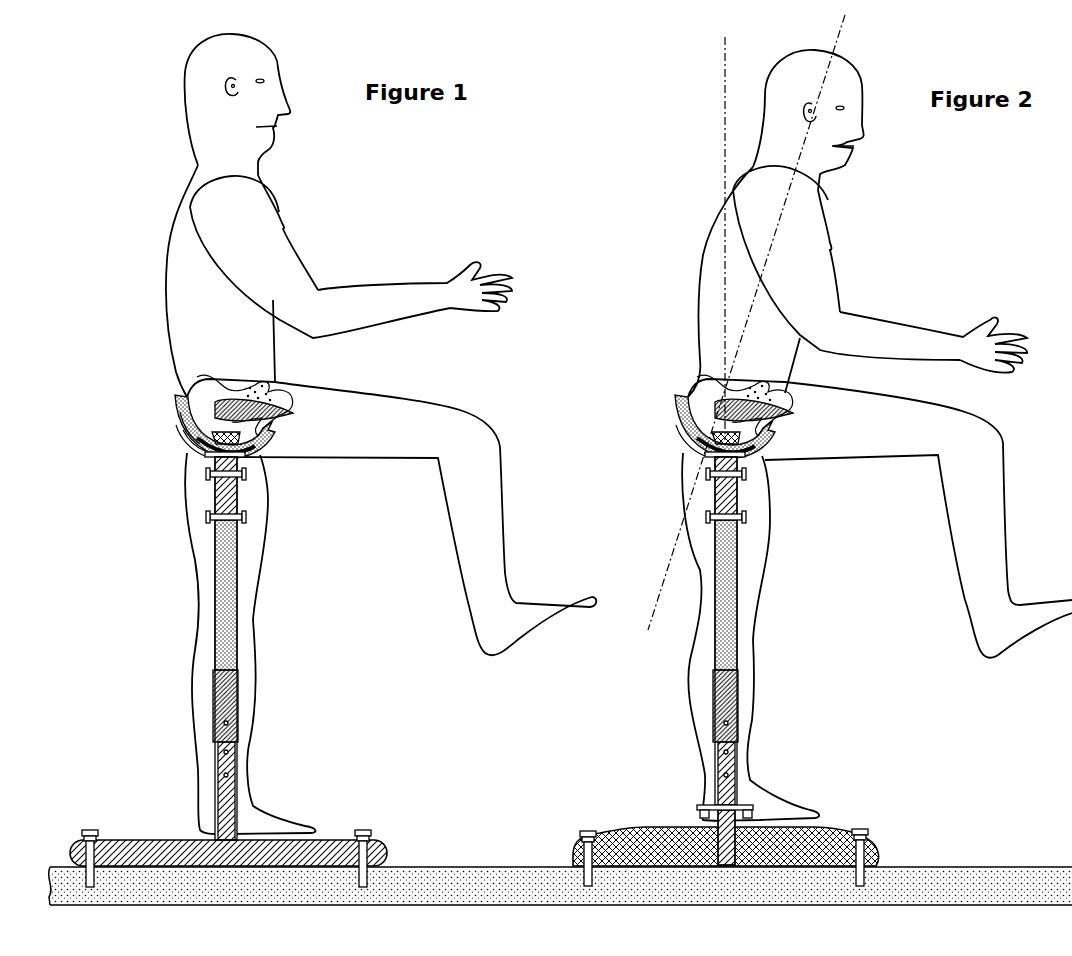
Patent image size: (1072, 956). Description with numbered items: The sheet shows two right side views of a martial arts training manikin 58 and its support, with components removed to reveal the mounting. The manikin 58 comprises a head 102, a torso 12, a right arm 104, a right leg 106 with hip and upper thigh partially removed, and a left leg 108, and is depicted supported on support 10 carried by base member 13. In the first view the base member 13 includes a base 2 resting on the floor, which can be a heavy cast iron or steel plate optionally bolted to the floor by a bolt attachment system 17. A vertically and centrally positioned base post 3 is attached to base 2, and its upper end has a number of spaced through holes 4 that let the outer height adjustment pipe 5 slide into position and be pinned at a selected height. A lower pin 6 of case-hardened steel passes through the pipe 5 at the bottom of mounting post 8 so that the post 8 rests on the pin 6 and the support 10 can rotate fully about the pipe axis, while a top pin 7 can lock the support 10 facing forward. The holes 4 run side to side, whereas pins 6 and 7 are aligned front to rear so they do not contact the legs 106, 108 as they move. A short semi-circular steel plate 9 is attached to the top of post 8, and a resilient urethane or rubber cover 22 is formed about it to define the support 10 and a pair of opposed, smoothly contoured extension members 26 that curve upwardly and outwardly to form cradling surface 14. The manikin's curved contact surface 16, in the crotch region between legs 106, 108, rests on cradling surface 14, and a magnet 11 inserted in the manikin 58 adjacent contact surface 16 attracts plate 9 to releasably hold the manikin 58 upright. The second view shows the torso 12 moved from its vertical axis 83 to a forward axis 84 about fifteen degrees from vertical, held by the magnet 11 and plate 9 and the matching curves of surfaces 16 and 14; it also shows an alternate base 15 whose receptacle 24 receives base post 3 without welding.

In FIG. 1, the base 2 is at (163, 843).
In FIG. 1, the base post 3 is at (217, 790).
In FIG. 2, the base post 3 is at (733, 783).
In FIG. 1, the spaced through holes 4 is at (217, 720).
In FIG. 1, the outer height adjustment pipe 5 is at (213, 567).
In FIG. 1, the lower pin 6 is at (210, 517).
In FIG. 1, the top pin 7 is at (210, 473).
In FIG. 1, the mounting post 8 is at (210, 458).
In FIG. 1, the semi-circular-shaped steel plate 9 is at (182, 443).
In FIG. 2, the semi-circular-shaped steel plate 9 is at (690, 440).
In FIG. 1, the support 10 is at (180, 433).
In FIG. 2, the support 10 is at (697, 437).
In FIG. 1, the magnet 11 is at (177, 398).
In FIG. 2, the magnet 11 is at (712, 427).
In FIG. 1, the torso 12 is at (185, 268).
In FIG. 2, the torso 12 is at (703, 298).
In FIG. 1, the base member 13 is at (108, 619).
In FIG. 2, the base member 13 is at (781, 642).
In FIG. 1, the cradling surface 14 is at (245, 418).
In FIG. 2, the cradling surface 14 is at (747, 415).
In FIG. 2, the alternate base 15 is at (633, 832).
In FIG. 1, the contact surface 16 is at (185, 427).
In FIG. 2, the contact surface 16 is at (693, 810).
In FIG. 1, the bolt attachment system 17 is at (365, 826).
In FIG. 2, the bolt attachment system 17 is at (870, 833).
In FIG. 1, the cover 22 is at (187, 437).
In FIG. 2, the receptacle 24 is at (747, 820).
In FIG. 1, the extension members 26 is at (190, 395).
In FIG. 2, the extension members 26 is at (677, 395).
In FIG. 1, the training manikin 58 is at (312, 212).
In FIG. 2, the training manikin 58 is at (880, 246).
In FIG. 2, the vertical axis 83 is at (723, 170).
In FIG. 2, the forward axis 84 is at (797, 165).
In FIG. 1, the head 102 is at (197, 87).
In FIG. 1, the right arm 104 is at (367, 305).
In FIG. 1, the right leg 106 is at (492, 513).
In FIG. 2, the right leg 106 is at (995, 498).
In FIG. 1, the left leg 108 is at (257, 553).
In FIG. 2, the left leg 108 is at (760, 538).